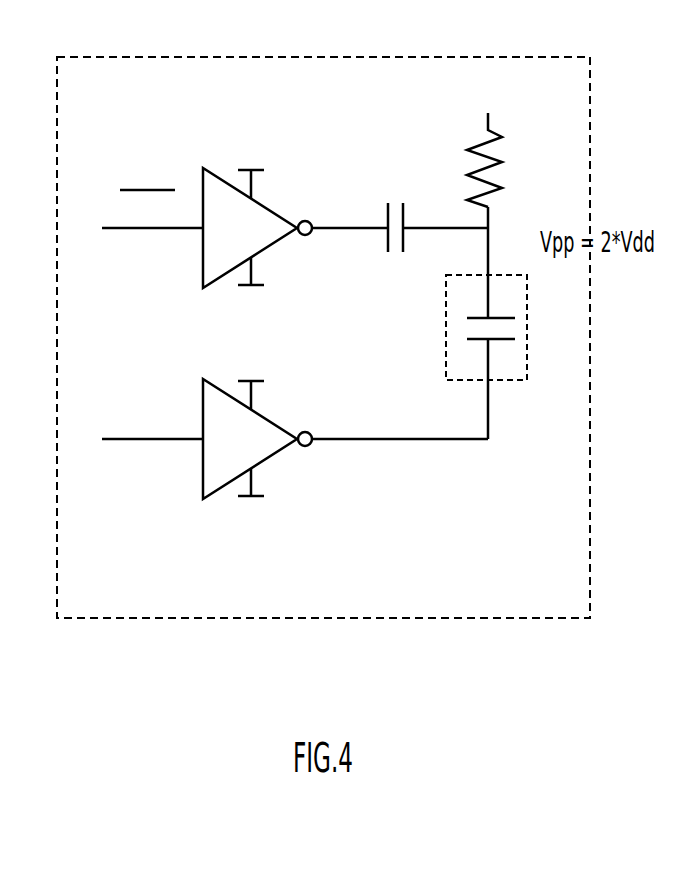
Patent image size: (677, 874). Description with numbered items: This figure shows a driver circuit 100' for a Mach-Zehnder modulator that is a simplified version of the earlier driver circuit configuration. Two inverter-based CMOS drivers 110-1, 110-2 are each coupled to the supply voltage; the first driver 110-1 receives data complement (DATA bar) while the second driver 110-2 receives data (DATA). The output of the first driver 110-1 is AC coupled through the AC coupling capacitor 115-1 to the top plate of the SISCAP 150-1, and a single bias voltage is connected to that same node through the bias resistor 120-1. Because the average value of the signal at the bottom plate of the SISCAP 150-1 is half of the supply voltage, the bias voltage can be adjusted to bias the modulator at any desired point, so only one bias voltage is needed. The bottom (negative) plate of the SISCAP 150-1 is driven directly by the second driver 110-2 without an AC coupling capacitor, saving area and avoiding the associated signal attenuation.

The driver circuit 100' is at (323, 313).
The first driver 110-1 is at (203, 254).
The second driver 110-2 is at (203, 465).
The AC coupling capacitor 115-1 is at (383, 237).
The bias resistor 120-1 is at (477, 150).
The SISCAP 150-1 is at (447, 320).